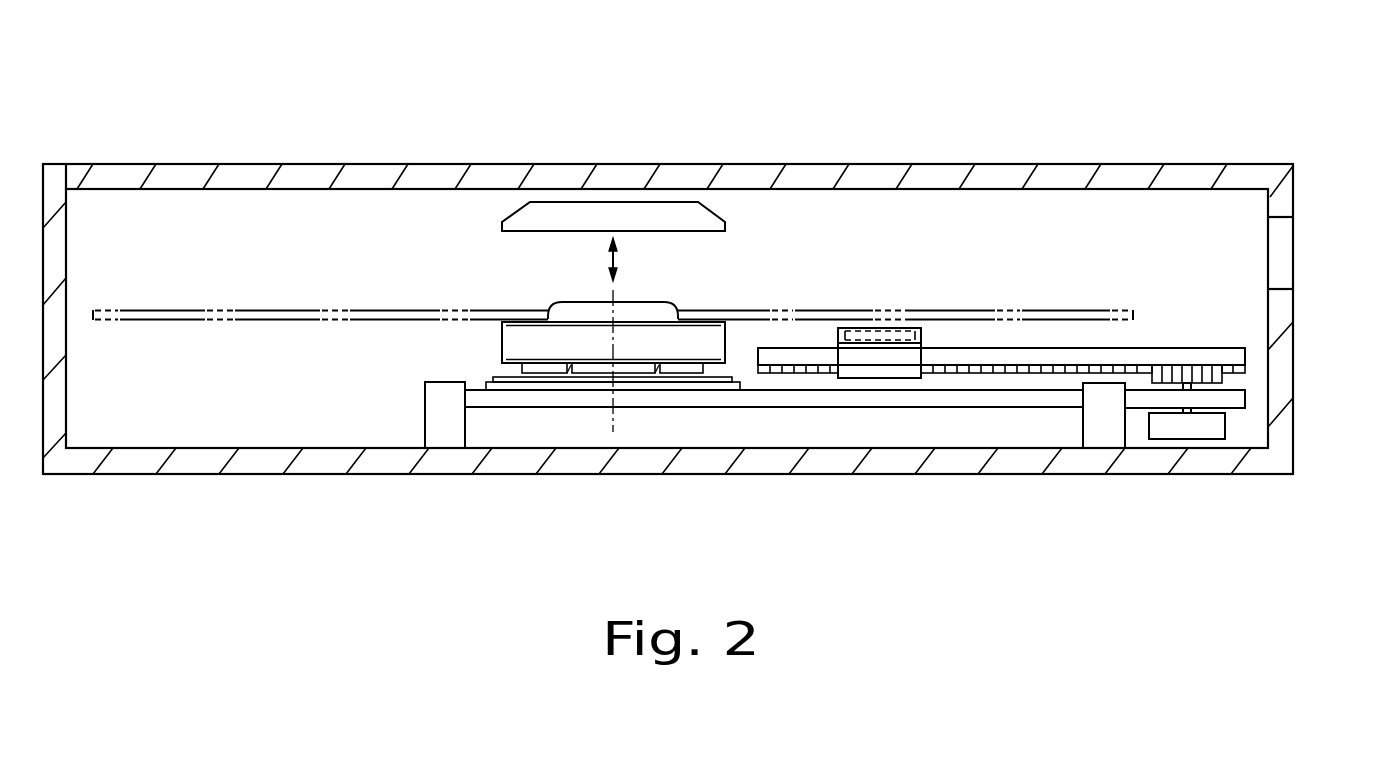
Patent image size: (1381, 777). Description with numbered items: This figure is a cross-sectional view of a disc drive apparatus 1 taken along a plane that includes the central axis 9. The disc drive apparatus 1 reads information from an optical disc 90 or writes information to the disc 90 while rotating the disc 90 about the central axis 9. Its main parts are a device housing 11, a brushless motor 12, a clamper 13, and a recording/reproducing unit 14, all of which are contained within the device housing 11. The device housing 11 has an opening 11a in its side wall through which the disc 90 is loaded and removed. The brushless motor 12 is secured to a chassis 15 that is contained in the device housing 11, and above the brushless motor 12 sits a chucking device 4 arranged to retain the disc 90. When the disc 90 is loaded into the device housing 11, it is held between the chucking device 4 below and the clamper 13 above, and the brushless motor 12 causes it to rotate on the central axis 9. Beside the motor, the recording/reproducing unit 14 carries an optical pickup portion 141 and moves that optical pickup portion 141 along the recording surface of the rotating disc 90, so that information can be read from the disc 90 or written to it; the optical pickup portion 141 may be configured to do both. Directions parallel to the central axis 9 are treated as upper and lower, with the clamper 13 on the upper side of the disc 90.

The disc drive apparatus 1 is at (114, 104).
The device housing 11 is at (1125, 178).
The opening 11a is at (1279, 260).
The clamper 13 is at (700, 212).
The chucking device 4 is at (648, 310).
The optical disc 90 is at (1047, 308).
The brushless motor 12 is at (516, 343).
The central axis 9 is at (616, 425).
The chassis 15 is at (712, 397).
The recording/reproducing unit 14 is at (873, 365).
The optical pickup portion 141 is at (860, 324).